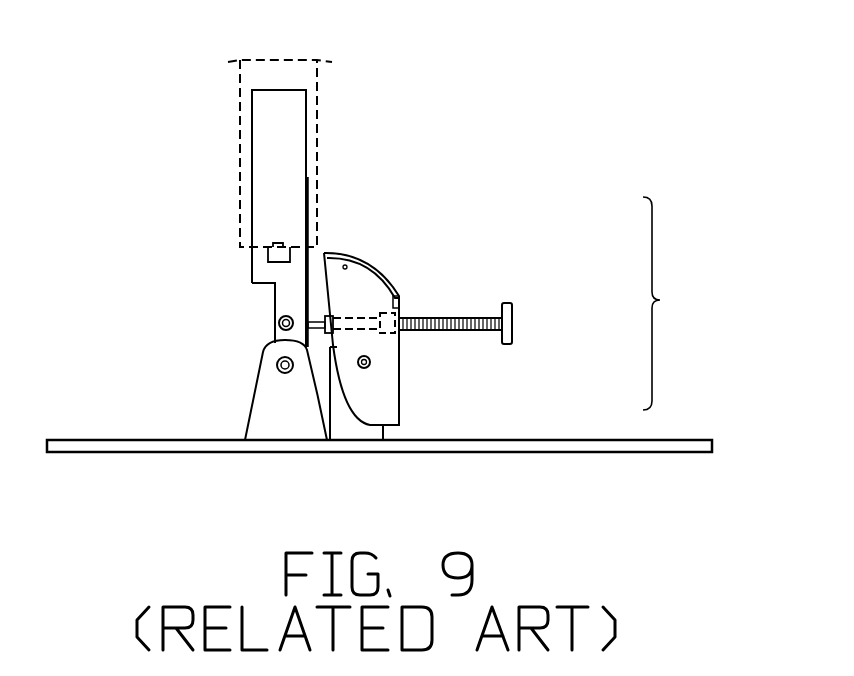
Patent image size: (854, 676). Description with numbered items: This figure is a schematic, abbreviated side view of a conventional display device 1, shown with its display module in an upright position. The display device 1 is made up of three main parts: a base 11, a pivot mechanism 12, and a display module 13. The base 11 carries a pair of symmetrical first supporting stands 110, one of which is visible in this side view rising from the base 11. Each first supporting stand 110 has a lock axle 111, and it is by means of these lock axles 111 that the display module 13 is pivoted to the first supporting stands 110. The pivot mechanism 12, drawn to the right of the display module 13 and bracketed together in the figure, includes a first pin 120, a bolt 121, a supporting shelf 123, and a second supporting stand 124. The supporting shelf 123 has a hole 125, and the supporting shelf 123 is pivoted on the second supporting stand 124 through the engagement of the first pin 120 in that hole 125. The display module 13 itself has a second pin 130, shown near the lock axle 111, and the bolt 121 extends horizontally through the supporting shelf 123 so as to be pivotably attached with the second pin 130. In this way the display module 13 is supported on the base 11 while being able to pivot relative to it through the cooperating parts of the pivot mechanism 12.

The display device 1 is at (381, 40).
The base 11 is at (682, 448).
The pivot mechanism 12 is at (506, 351).
The display module 13 is at (280, 147).
The first supporting stand 110 is at (268, 418).
The lock axle 111 is at (277, 363).
The first pin 120 is at (370, 366).
The bolt 121 is at (508, 323).
The supporting shelf 123 is at (353, 283).
The second supporting stand 124 is at (344, 427).
The hole 125 is at (370, 361).
The second pin 130 is at (279, 321).